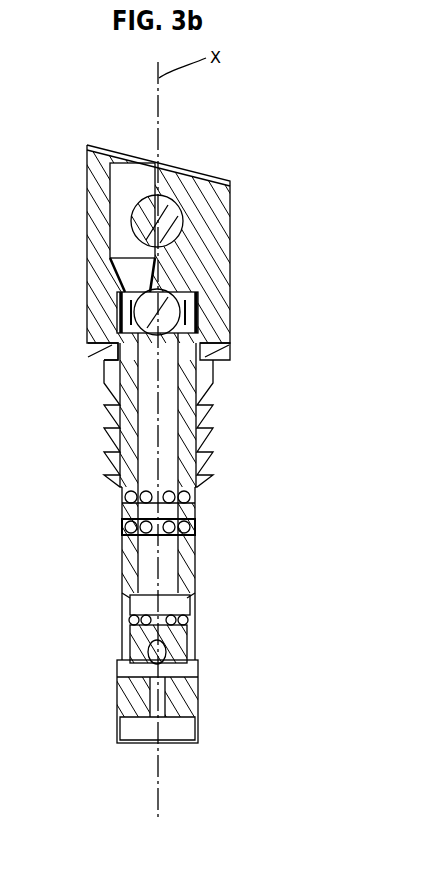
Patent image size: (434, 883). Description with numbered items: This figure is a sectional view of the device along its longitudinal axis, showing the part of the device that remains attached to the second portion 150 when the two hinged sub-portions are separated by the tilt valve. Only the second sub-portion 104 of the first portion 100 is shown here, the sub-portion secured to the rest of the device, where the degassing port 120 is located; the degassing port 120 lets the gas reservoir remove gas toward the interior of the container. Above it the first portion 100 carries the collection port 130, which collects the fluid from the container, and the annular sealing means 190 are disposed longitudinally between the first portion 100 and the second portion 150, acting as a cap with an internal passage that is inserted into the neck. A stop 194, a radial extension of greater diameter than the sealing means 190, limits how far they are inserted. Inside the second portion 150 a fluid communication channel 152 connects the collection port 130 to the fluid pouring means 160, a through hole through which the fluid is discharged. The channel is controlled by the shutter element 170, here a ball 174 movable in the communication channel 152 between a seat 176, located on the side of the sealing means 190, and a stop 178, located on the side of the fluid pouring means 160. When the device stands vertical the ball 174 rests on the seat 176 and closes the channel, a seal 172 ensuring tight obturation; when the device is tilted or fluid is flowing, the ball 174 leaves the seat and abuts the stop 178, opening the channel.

The first portion 100 is at (217, 441).
The second sub-portion 104 is at (285, 482).
The degassing port 120 is at (195, 623).
The collection port 130 is at (200, 525).
The second portion 150 is at (285, 143).
The fluid communication channel 152 is at (168, 372).
The fluid pouring means 160 is at (70, 152).
The shutter element 170 is at (70, 258).
The seal 172 is at (178, 314).
The ball 174 is at (178, 213).
The seat 176 is at (108, 330).
The stop 178 is at (165, 214).
The sealing means 190 is at (285, 360).
The stop 194 is at (105, 357).